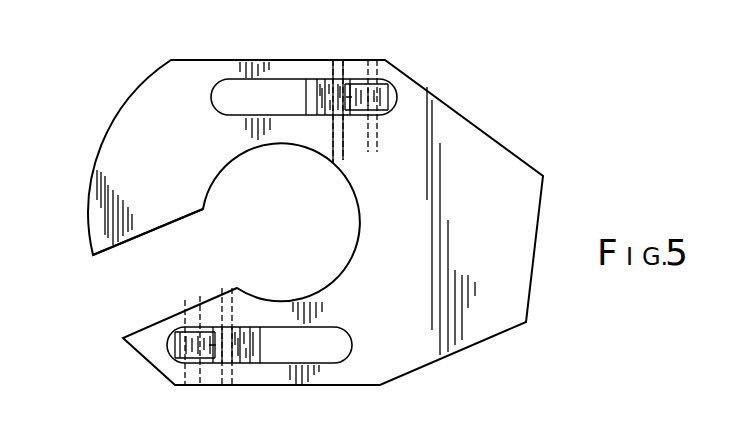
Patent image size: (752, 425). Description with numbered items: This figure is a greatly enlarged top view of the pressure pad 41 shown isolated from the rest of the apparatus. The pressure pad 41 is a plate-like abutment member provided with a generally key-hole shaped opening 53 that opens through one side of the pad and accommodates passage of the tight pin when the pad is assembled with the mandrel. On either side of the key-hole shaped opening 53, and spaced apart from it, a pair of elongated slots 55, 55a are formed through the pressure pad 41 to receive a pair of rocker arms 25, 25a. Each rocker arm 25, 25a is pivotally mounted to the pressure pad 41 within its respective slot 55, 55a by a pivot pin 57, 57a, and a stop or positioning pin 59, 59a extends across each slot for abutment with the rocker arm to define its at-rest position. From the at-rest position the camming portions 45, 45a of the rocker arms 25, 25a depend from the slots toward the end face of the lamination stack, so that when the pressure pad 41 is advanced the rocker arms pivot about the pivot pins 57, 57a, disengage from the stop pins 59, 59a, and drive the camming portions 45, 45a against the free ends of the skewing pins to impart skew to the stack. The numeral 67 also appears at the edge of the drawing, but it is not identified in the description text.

The pressure pad 41 is at (117, 163).
The key-hole shaped opening 53 is at (112, 250).
The slot 55a is at (221, 79).
The camming portion 45a is at (306, 100).
The rocker arm 25a is at (328, 97).
The stop pin 59a is at (335, 103).
The pivot pin 57a is at (373, 91).
The slot 55 is at (330, 366).
The camming portion 45 is at (262, 350).
The rocker arm 25 is at (247, 357).
The stop pin 59 is at (228, 343).
The pivot pin 57 is at (184, 372).
The cutter element 67 is at (503, 421).